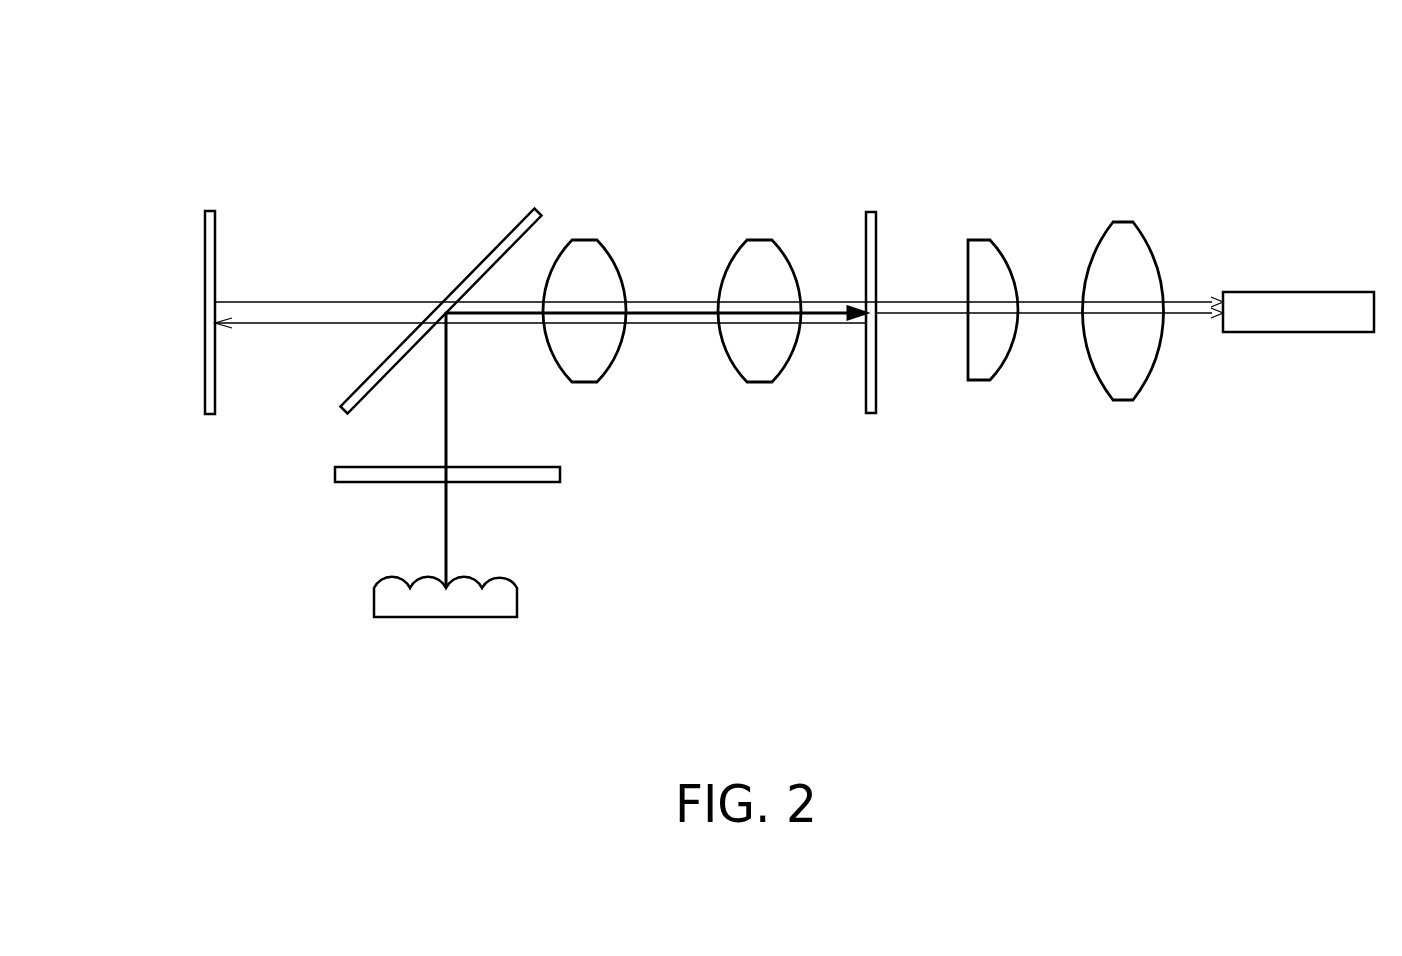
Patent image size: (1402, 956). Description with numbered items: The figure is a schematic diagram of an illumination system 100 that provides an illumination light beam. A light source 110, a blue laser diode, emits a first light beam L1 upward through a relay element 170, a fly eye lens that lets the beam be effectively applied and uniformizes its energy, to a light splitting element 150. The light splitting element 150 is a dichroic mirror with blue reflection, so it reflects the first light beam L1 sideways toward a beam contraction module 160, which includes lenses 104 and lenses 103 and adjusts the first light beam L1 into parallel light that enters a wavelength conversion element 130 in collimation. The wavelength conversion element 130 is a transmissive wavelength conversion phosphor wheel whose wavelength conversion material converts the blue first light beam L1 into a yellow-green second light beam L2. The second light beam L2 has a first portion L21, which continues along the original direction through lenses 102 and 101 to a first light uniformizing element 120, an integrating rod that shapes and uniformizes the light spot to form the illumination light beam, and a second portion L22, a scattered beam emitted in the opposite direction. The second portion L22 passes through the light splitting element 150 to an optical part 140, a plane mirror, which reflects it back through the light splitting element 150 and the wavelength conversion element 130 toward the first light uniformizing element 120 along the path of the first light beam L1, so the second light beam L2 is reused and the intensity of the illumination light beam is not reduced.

The illumination system 100 is at (733, 379).
The lens 101 is at (1127, 222).
The lens 102 is at (980, 240).
The lens 103 is at (762, 240).
The lens 104 is at (588, 240).
The light source 110 is at (517, 601).
The first light uniformizing element 120 is at (1298, 292).
The wavelength conversion element 130 is at (871, 212).
The optical part 140 is at (212, 211).
The light splitting element 150 is at (540, 210).
The beam contraction module 160 is at (728, 150).
The relay element 170 is at (560, 473).
The first light beam L1 is at (677, 322).
The second light beam L2 is at (143, 85).
The first portion L21 is at (1047, 313).
The second portion L22 is at (825, 303).